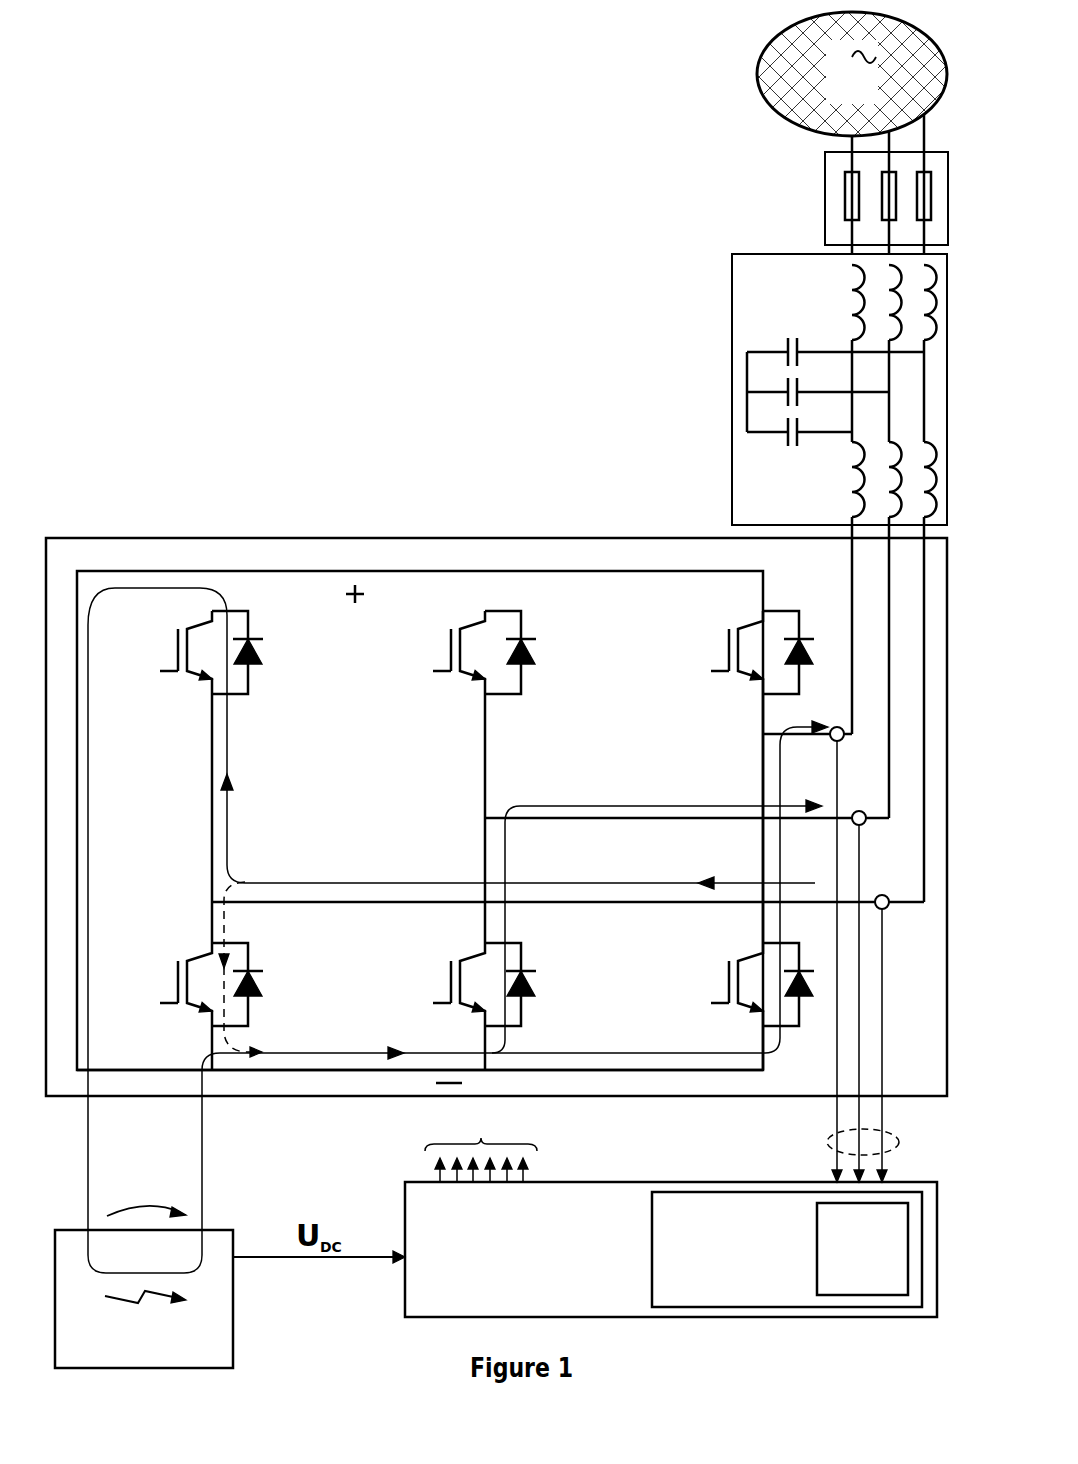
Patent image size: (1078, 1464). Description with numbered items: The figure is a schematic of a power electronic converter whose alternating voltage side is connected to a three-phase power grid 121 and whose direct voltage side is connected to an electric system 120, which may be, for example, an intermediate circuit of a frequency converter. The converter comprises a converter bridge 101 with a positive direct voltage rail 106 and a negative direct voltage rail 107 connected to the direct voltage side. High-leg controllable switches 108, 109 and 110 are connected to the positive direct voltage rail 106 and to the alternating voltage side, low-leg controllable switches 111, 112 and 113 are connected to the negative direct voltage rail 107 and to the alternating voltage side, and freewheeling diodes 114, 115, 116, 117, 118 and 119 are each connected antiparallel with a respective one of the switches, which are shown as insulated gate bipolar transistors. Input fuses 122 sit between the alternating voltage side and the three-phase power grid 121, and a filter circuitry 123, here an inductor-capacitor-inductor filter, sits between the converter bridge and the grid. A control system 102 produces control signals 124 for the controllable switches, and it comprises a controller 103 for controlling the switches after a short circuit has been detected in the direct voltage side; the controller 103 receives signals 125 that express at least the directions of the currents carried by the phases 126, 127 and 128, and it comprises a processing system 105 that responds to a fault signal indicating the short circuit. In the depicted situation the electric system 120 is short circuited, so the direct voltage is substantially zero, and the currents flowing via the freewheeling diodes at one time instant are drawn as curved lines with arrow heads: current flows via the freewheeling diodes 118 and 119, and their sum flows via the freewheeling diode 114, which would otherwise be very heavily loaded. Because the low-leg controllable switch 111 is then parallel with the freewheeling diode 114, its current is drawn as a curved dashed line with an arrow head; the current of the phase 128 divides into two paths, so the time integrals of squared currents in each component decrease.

The converter bridge 101 is at (425, 537).
The control system 102 is at (522, 1226).
The controller 103 is at (707, 1222).
The processing system 105 is at (840, 1236).
The positive direct voltage rail 106 is at (277, 571).
The negative direct voltage rail 107 is at (287, 1072).
The high-leg controllable switch 108 is at (189, 676).
The high-leg controllable switch 109 is at (462, 676).
The high-leg controllable switch 110 is at (740, 676).
The low-leg controllable switch 111 is at (189, 1011).
The low-leg controllable switch 112 is at (462, 1011).
The low-leg controllable switch 113 is at (740, 1011).
The freewheeling diode 114 is at (264, 653).
The freewheeling diode 115 is at (537, 653).
The freewheeling diode 116 is at (815, 650).
The freewheeling diode 117 is at (264, 988).
The freewheeling diode 118 is at (537, 988).
The freewheeling diode 119 is at (803, 998).
The electric system 120 is at (127, 1342).
The three-phase power grid 121 is at (834, 101).
The input fuses 122 is at (825, 196).
The filter circuitry 123 is at (732, 293).
The control signals 124 is at (481, 1148).
The signals 125 is at (827, 1142).
The phase 126 is at (776, 738).
The phase 127 is at (732, 818).
The phase 128 is at (723, 902).